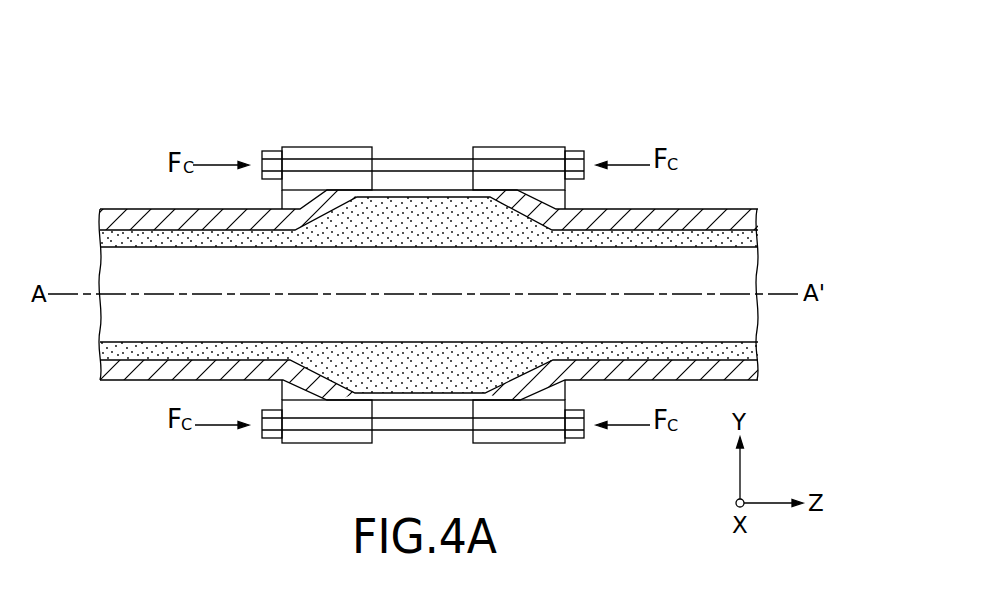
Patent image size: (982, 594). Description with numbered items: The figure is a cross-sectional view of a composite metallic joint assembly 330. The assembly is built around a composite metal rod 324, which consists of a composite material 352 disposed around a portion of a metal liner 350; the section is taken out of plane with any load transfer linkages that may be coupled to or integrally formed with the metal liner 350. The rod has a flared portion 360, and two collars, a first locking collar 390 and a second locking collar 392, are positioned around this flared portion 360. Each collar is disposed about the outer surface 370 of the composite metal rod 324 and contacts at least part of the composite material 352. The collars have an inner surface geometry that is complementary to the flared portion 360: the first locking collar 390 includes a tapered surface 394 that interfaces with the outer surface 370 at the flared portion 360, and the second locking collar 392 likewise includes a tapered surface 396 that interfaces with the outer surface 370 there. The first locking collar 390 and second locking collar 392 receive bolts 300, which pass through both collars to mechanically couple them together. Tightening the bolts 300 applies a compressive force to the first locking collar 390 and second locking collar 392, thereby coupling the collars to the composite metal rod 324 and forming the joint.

The bolt 300 is at (412, 162).
The composite metal rod 324 is at (106, 186).
The composite metallic joint assembly 330 is at (192, 100).
The metal liner 350 is at (747, 352).
The composite material 352 is at (753, 368).
The flared portion 360 is at (542, 451).
The outer surface 370 is at (303, 212).
The first locking collar 390 is at (350, 157).
The second locking collar 392 is at (510, 153).
The tapered surface 394 is at (303, 215).
The tapered surface 396 is at (542, 210).